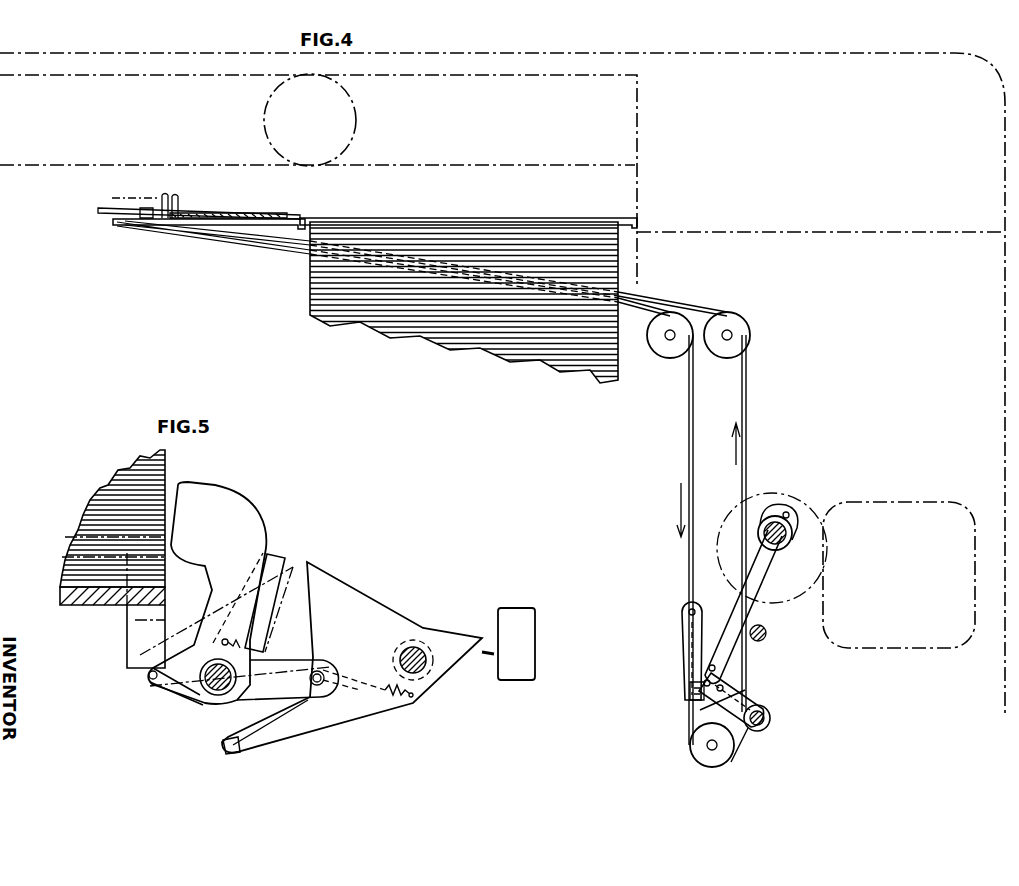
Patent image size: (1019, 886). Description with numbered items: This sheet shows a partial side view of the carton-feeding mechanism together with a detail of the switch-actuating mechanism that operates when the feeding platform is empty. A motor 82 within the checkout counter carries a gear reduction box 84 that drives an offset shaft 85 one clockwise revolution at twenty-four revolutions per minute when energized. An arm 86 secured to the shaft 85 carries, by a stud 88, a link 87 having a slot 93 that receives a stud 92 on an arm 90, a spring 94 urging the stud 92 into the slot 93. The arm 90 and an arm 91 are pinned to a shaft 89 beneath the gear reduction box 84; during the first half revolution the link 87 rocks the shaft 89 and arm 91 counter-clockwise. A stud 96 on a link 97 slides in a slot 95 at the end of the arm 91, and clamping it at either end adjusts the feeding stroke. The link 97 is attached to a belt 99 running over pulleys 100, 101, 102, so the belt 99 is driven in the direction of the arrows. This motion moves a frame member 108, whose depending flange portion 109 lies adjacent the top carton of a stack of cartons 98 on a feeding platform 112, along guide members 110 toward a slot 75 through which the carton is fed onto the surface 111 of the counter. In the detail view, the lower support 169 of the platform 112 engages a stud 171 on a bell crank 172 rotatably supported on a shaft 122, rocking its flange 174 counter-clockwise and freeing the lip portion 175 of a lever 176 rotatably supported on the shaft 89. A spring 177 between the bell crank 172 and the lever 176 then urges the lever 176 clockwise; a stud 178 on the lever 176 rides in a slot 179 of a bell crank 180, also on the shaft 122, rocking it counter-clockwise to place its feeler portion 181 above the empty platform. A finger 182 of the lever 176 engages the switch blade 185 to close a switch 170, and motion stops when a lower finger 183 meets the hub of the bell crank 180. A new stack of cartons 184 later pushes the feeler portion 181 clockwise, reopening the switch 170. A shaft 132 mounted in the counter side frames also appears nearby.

In FIG. 4, the slot 75 is at (640, 232).
In FIG. 4, the motor 82 is at (898, 502).
In FIG. 4, the gear reduction box 84 is at (788, 500).
In FIG. 4, the offset shaft 85 is at (780, 548).
In FIG. 4, the arm 86 is at (797, 520).
In FIG. 4, the link 87 is at (740, 607).
In FIG. 4, the stud 88 is at (780, 517).
In FIG. 4, the shaft 89 is at (771, 726).
In FIG. 5, the shaft 89 is at (427, 677).
In FIG. 4, the arm 90 is at (752, 700).
In FIG. 4, the arm 91 is at (702, 715).
In FIG. 4, the stud 92 is at (716, 668).
In FIG. 4, the slot 93 is at (704, 683).
In FIG. 4, the spring 94 is at (724, 688).
In FIG. 4, the slot 95 is at (694, 696).
In FIG. 4, the stud 96 is at (690, 692).
In FIG. 4, the link 97 is at (682, 628).
In FIG. 4, the stack of cartons 98 is at (310, 290).
In FIG. 4, the belt 99 is at (688, 452).
In FIG. 4, the pulley 100 is at (705, 755).
In FIG. 4, the pulley 101 is at (674, 350).
In FIG. 4, the pulley 102 is at (740, 325).
In FIG. 4, the frame member 108 is at (300, 215).
In FIG. 4, the depending flange portion 109 is at (298, 228).
In FIG. 4, the guide member 110 is at (383, 218).
In FIG. 4, the surface 111 is at (755, 232).
In FIG. 5, the feeding platform 112 is at (110, 605).
In FIG. 5, the shaft 122 is at (225, 708).
In FIG. 4, the shaft 132 is at (766, 638).
In FIG. 5, the lower support 169 is at (127, 655).
In FIG. 5, the switch 170 is at (520, 608).
In FIG. 5, the stud 171 is at (148, 688).
In FIG. 5, the bell crank 172 is at (176, 702).
In FIG. 5, the flange 174 is at (273, 553).
In FIG. 5, the lip portion 175 is at (293, 567).
In FIG. 5, the lever 176 is at (360, 597).
In FIG. 5, the spring 177 is at (345, 668).
In FIG. 5, the stud 178 is at (327, 680).
In FIG. 5, the slot 179 is at (310, 680).
In FIG. 5, the bell crank 180 is at (297, 733).
In FIG. 5, the feeler portion 181 is at (213, 500).
In FIG. 5, the finger 182 is at (460, 633).
In FIG. 5, the lower finger 183 is at (223, 745).
In FIG. 5, the stack of cartons 184 is at (160, 478).
In FIG. 5, the switch blade 185 is at (487, 658).